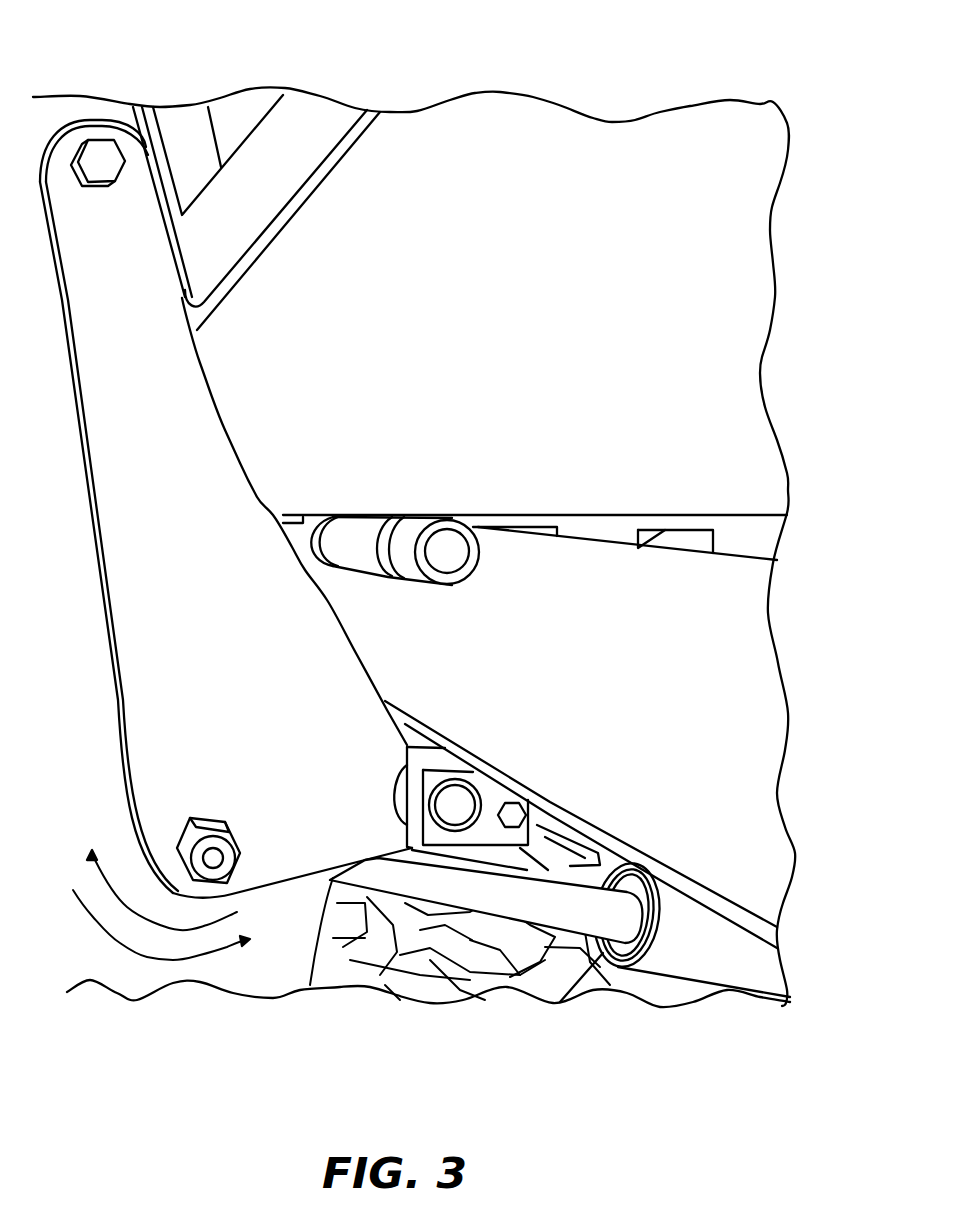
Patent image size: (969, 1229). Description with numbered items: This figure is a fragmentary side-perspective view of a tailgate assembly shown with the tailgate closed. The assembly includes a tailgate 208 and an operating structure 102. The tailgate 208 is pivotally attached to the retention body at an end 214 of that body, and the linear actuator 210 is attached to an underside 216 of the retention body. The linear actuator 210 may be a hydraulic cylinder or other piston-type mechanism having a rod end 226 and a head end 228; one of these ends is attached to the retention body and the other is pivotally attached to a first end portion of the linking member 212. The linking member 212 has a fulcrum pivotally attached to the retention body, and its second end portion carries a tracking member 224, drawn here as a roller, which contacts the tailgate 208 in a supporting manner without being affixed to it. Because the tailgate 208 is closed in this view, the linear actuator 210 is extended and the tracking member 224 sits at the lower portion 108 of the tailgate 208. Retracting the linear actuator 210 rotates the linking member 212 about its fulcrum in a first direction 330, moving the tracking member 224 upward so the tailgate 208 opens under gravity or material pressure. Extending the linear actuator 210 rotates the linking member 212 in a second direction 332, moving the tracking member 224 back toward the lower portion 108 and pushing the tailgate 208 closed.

The operating structure 102 is at (418, 99).
The lower portion 108 is at (234, 107).
The tailgate 208 is at (530, 395).
The linear actuator 210 is at (659, 958).
The linking member 212 is at (245, 677).
The end of the retention body 214 is at (586, 686).
The underside of the retention body 216 is at (723, 920).
The tracking member 224 is at (107, 140).
The rod end 226 is at (332, 878).
The head end 228 is at (767, 968).
The first direction 330 is at (121, 947).
The second direction 332 is at (194, 930).